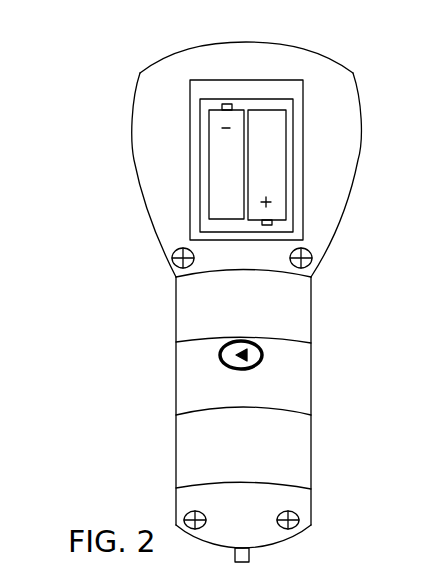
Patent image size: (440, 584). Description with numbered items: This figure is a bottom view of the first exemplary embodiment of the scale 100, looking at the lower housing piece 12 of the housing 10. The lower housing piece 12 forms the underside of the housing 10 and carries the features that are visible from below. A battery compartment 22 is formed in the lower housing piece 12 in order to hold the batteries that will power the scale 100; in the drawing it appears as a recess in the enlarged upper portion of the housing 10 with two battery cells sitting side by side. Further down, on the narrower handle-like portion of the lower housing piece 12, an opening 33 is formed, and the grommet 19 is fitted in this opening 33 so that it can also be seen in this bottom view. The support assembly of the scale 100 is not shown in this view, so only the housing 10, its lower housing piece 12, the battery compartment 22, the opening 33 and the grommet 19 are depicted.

The housing 10 is at (214, 287).
The lower housing piece 12 is at (140, 73).
The grommet 19 is at (221, 356).
The battery compartment 22 is at (298, 140).
The opening 33 is at (262, 360).
The scale 100 is at (229, 287).